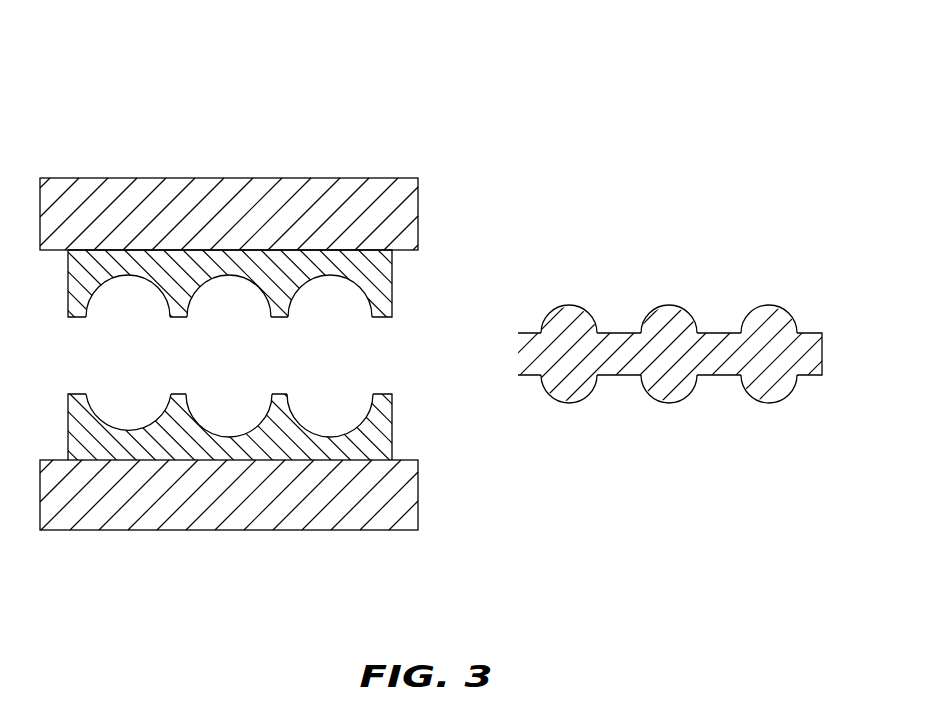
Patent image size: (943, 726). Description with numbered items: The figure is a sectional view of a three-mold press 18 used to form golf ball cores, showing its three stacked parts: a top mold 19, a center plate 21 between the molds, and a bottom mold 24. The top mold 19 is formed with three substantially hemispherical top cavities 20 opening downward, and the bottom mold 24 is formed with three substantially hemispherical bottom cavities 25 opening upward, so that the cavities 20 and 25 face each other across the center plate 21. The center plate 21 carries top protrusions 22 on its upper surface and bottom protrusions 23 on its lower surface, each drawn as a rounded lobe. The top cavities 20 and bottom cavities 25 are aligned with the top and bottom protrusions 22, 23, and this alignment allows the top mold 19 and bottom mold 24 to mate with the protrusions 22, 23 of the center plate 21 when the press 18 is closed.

The three-mold press 18 is at (285, 146).
The top mold 19 is at (392, 280).
The top cavities 20 is at (330, 299).
The center plate 21 is at (822, 355).
The top protrusions 22 is at (769, 307).
The bottom protrusions 23 is at (570, 401).
The bottom mold 24 is at (392, 430).
The bottom cavities 25 is at (133, 415).